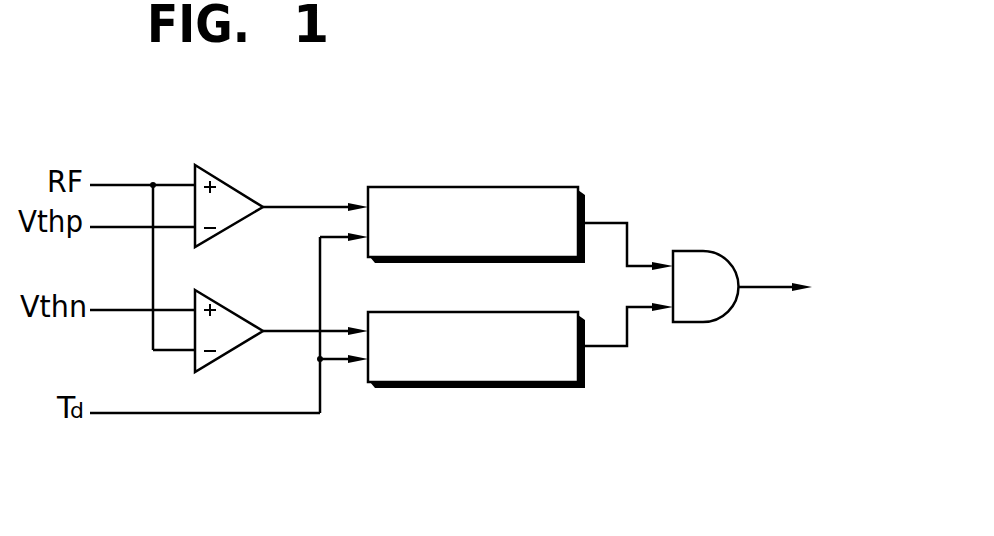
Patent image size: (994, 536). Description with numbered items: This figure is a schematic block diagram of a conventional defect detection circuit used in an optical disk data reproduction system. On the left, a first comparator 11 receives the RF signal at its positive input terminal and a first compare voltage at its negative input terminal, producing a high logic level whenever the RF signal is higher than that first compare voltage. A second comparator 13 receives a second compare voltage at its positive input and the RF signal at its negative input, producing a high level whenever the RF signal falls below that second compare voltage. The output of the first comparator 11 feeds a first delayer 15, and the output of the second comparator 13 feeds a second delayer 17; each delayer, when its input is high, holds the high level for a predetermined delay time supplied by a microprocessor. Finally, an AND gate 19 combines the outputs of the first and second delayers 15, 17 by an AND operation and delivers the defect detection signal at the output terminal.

The first comparator 11 is at (232, 182).
The second comparator 13 is at (233, 307).
The first delayer 15 is at (557, 188).
The second delayer 17 is at (543, 312).
The AND gate 19 is at (695, 248).